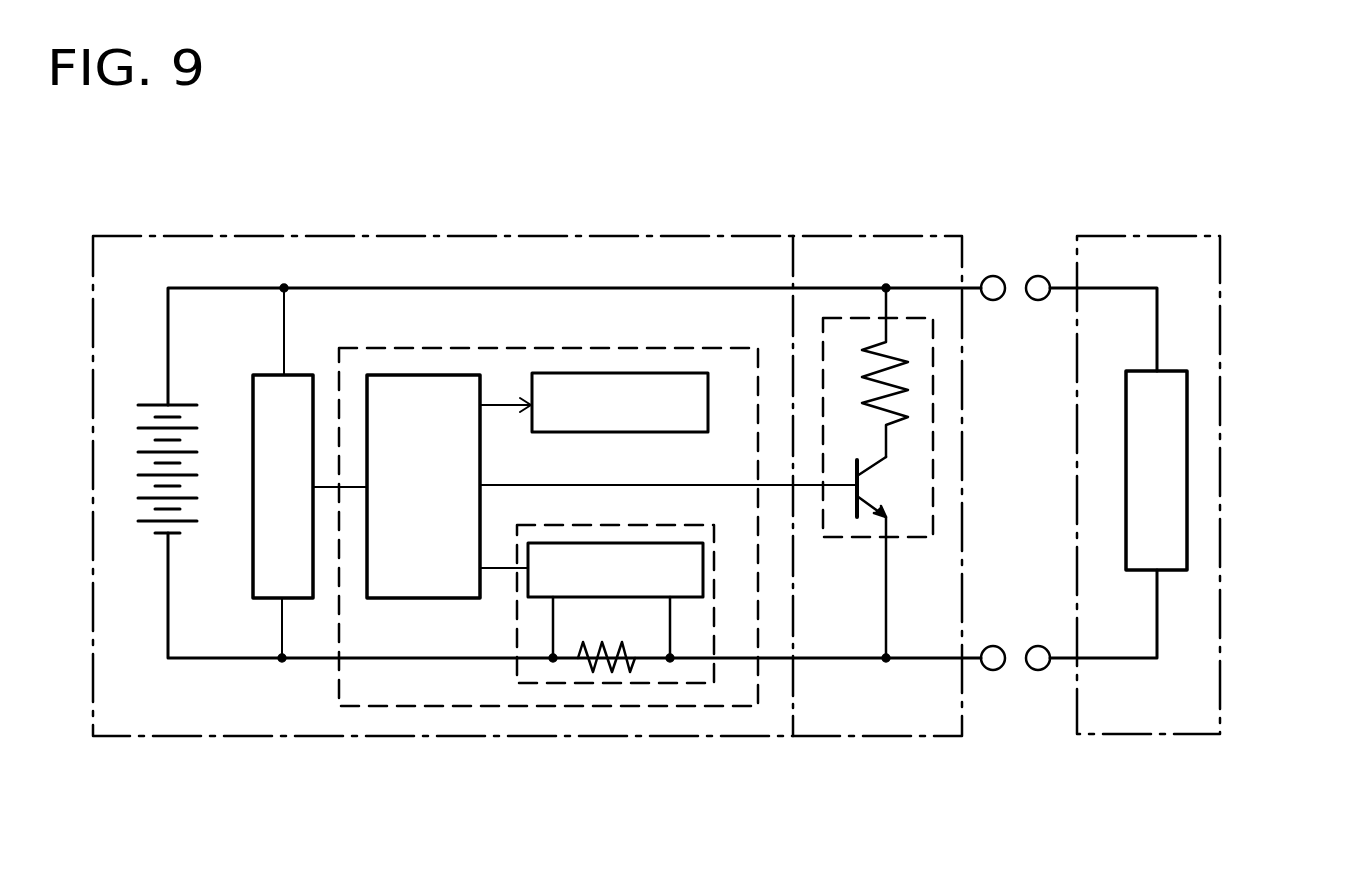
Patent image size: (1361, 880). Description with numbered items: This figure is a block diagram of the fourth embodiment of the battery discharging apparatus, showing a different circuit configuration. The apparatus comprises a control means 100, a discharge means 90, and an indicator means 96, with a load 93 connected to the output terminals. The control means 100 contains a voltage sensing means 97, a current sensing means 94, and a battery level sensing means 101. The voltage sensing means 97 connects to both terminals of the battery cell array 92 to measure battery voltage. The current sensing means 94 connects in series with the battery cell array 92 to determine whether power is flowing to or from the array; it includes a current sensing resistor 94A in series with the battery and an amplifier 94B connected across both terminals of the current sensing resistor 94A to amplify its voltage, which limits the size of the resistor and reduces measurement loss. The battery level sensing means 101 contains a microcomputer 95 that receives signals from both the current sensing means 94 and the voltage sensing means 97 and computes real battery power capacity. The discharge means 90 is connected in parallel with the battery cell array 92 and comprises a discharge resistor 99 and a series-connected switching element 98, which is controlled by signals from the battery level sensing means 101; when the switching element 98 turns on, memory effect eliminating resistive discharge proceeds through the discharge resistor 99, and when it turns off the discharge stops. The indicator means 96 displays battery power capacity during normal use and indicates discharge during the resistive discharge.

The discharge means 90 is at (906, 315).
The battery cell array 92 is at (143, 455).
The load 93 is at (1172, 537).
The current sensing means 94 is at (554, 686).
The current sensing resistor 94A is at (632, 668).
The amplifier 94B is at (705, 590).
The microcomputer 95 is at (388, 387).
The indicator means 96 is at (703, 426).
The voltage sensing means 97 is at (262, 380).
The switching element 98 is at (868, 490).
The discharge resistor 99 is at (906, 362).
The control means 100 is at (533, 235).
The battery level sensing means 101 is at (329, 679).